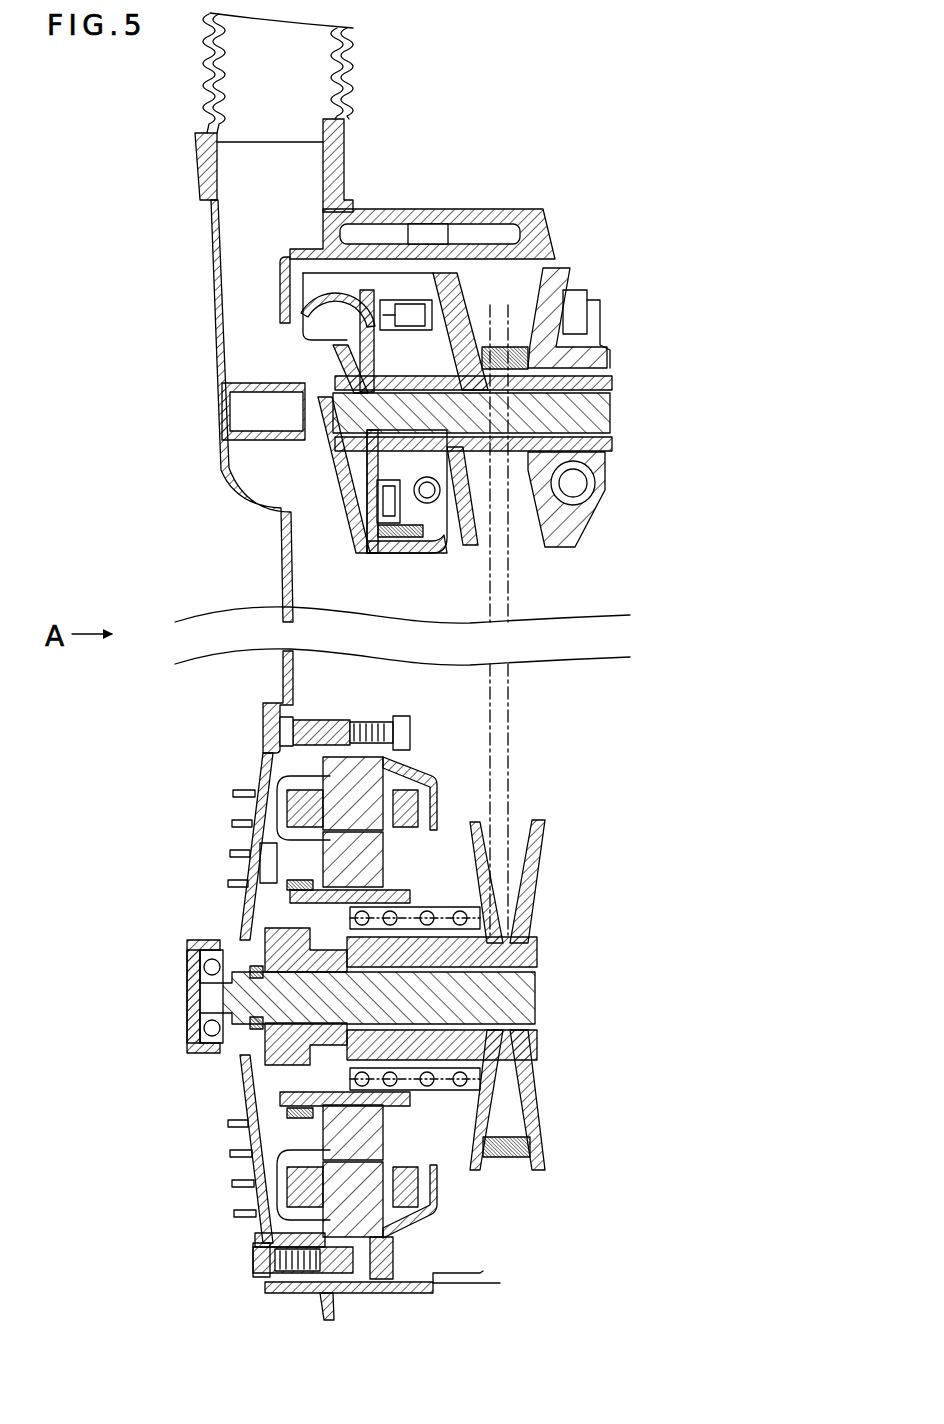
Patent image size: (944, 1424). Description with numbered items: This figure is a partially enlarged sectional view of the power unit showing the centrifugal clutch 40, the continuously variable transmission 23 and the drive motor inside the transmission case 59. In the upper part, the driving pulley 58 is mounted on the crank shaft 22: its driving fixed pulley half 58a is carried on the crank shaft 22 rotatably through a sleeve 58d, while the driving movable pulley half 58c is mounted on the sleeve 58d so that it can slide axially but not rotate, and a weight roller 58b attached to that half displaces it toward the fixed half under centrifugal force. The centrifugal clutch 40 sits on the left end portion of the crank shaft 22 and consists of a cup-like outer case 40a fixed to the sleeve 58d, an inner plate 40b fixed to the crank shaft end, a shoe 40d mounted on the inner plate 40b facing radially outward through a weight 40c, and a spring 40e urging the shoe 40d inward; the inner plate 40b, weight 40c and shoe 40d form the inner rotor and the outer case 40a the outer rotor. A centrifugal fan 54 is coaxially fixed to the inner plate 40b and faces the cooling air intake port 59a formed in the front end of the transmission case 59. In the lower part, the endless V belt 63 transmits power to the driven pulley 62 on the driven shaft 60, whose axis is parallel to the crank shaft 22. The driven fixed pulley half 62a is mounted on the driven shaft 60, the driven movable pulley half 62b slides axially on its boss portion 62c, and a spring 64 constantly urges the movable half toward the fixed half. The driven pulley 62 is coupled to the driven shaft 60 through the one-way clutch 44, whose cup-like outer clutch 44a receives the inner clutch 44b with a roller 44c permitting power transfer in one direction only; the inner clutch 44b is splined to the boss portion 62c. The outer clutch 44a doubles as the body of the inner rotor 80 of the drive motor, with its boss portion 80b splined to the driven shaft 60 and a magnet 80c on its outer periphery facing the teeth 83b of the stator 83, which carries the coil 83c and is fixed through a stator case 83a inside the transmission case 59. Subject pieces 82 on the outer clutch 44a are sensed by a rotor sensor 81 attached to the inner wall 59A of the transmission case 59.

The crank shaft 22 is at (605, 410).
The continuously variable transmission 23 is at (522, 611).
The centrifugal clutch 40 is at (400, 256).
The outer case 40a is at (470, 548).
The inner plate 40b is at (340, 467).
The weight 40c is at (372, 557).
The shoe 40d is at (408, 555).
The spring 40e is at (447, 523).
The one-way clutch 44 is at (112, 883).
The outer clutch 44a is at (253, 903).
The inner clutch 44b is at (203, 968).
The roller 44c is at (260, 923).
The centrifugal fan 54 is at (297, 262).
The driving pulley 58 is at (562, 262).
The driving fixed pulley half 58a is at (452, 292).
The weight roller 58b is at (576, 485).
The driving movable pulley half 58c is at (576, 288).
The sleeve 58d is at (612, 386).
The transmission case 59 is at (230, 480).
The cooling air intake port 59a is at (281, 332).
The inner wall 59A is at (262, 774).
The driven shaft 60 is at (527, 998).
The driven pulley 62 is at (550, 802).
The driven fixed pulley half 62a is at (546, 824).
The driven movable pulley half 62b is at (472, 822).
The boss portion 62c is at (505, 950).
The endless V belt 63 is at (510, 697).
The spring 64 is at (430, 906).
The inner rotor 80 is at (238, 1042).
The boss portion 80b is at (275, 1040).
The magnet 80c is at (382, 1131).
The rotor sensor 81 is at (262, 862).
The subject pieces 82 is at (290, 885).
The stator 83 is at (306, 1243).
The stator case 83a is at (395, 1294).
The teeth 83b is at (347, 1292).
The coil 83c is at (412, 1197).